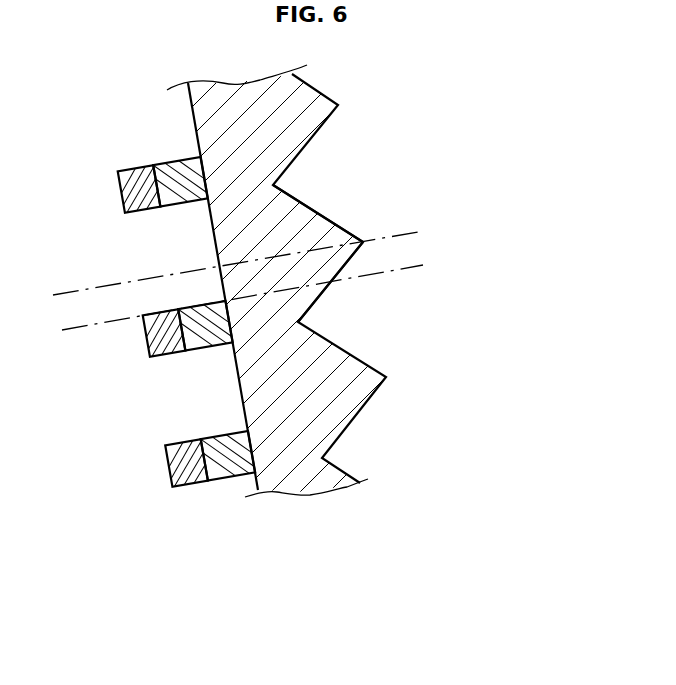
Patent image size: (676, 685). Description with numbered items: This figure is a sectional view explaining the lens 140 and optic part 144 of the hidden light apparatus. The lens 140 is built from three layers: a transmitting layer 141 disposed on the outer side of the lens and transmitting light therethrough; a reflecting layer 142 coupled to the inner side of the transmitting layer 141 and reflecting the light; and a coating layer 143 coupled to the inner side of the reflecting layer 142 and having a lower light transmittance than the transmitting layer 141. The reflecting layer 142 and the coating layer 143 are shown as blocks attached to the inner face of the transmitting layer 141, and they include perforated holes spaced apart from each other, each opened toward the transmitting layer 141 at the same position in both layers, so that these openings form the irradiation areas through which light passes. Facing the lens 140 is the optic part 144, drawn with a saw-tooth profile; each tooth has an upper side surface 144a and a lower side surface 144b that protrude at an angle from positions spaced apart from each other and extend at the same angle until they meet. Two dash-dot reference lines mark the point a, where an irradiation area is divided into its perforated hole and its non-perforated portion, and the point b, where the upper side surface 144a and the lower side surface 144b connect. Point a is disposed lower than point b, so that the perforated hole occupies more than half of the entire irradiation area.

The lens 140 is at (338, 354).
The transmitting layer 141 is at (297, 467).
The reflecting layer 142 is at (206, 375).
The coating layer 143 is at (190, 467).
The optic part 144 is at (467, 122).
The upper side surface 144a is at (318, 213).
The lower side surface 144b is at (323, 292).
The point a is at (231, 304).
The point b is at (225, 272).